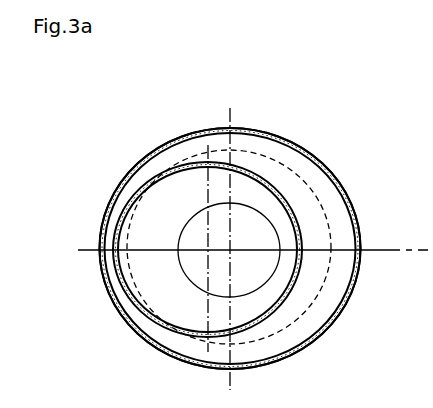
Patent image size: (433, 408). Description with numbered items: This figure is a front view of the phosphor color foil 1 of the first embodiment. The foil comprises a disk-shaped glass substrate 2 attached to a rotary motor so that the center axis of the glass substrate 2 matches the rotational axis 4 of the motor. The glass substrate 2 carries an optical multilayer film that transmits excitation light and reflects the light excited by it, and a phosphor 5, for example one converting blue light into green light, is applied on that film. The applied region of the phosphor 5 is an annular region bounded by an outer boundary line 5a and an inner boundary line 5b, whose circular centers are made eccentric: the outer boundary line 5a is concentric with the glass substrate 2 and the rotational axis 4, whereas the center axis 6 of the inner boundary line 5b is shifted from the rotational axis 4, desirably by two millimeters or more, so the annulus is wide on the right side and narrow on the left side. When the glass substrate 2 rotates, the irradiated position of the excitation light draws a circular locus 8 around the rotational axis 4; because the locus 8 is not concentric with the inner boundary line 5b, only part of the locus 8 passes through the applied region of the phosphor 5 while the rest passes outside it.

The phosphor color foil 1 is at (97, 168).
The glass substrate 2 is at (182, 195).
The rotational axis 4 is at (229, 250).
The phosphor 5 is at (290, 160).
The outer boundary line 5a is at (318, 156).
The inner boundary line 5b is at (301, 233).
The center axis 6 is at (208, 250).
The locus 8 is at (322, 207).